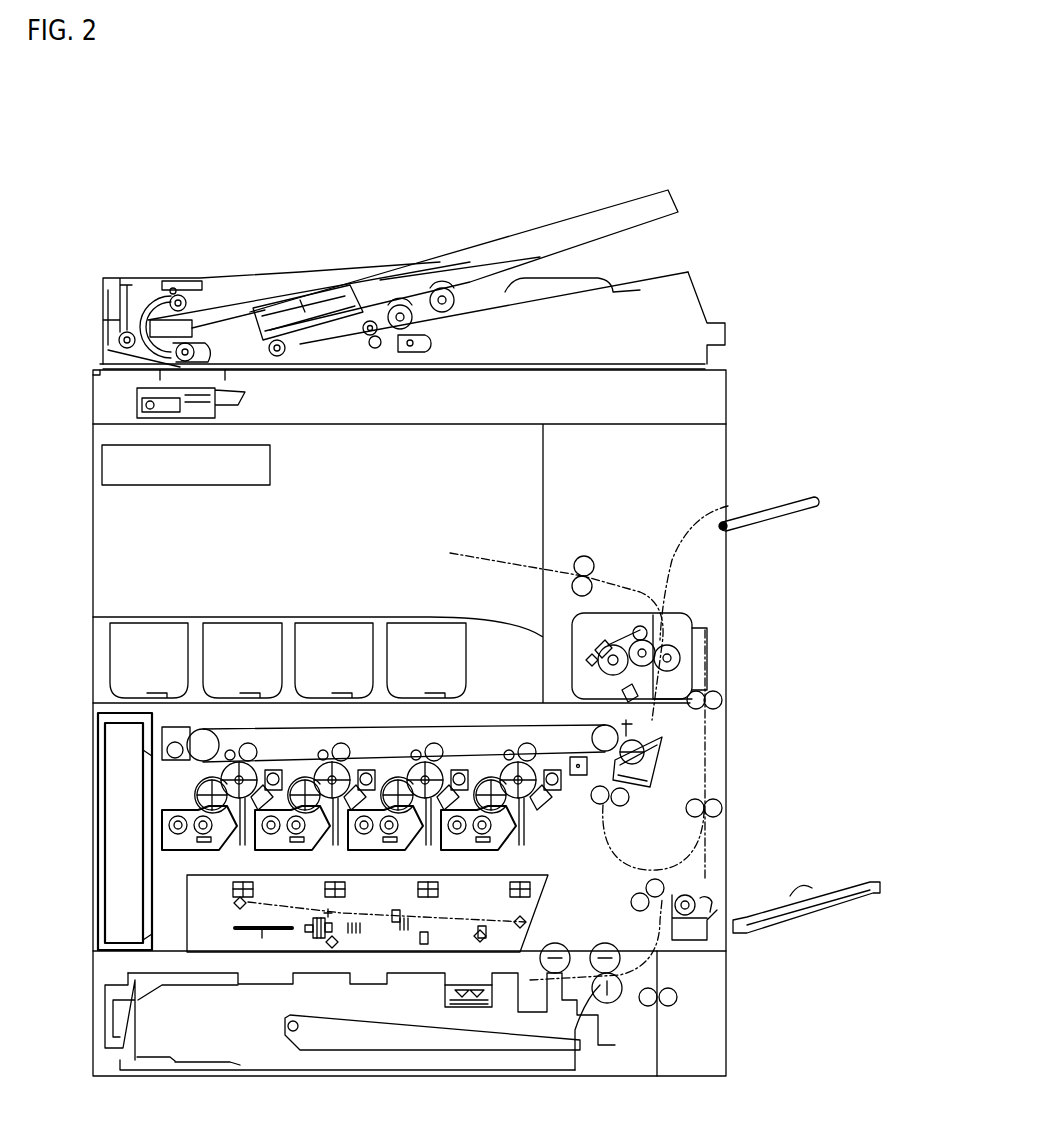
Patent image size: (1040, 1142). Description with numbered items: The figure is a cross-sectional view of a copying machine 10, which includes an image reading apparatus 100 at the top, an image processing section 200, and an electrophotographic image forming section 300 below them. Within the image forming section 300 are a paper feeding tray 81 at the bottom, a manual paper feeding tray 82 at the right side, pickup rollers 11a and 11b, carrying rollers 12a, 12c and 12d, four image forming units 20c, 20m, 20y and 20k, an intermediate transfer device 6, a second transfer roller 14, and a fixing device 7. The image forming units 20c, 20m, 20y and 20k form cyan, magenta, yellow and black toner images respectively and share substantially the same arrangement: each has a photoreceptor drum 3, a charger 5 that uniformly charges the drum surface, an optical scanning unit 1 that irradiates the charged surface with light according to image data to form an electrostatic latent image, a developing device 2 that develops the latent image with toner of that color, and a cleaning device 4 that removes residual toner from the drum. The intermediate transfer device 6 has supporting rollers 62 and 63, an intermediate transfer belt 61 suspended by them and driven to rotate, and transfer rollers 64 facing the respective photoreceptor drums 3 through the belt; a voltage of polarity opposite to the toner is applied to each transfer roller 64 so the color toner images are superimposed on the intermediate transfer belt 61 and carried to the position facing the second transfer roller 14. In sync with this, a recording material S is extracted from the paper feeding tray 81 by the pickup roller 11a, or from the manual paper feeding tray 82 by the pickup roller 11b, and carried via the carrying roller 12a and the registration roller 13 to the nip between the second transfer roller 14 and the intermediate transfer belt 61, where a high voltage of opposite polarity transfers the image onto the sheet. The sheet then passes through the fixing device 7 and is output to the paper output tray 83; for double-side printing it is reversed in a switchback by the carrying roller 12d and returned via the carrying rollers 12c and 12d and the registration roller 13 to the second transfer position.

The copying machine 10 is at (715, 98).
The image reading apparatus 100 is at (76, 339).
The image processing section 200 is at (101, 470).
The image forming section 300 is at (76, 736).
The optical scanning unit 1 is at (550, 881).
The developing device 2 is at (198, 792).
The photoreceptor drum 3 is at (237, 762).
The charging device 4 is at (283, 770).
The charger 5 is at (242, 842).
The intermediate transfer device 6 is at (413, 706).
The intermediate transfer belt 61 is at (516, 718).
The supporting roller 62 is at (618, 733).
The supporting roller 63 is at (205, 728).
The transfer roller 64 is at (257, 748).
The fixing device 7 is at (700, 630).
The paper feeding tray 81 is at (353, 1030).
The manual paper feeding tray 82 is at (827, 878).
The paper output tray 83 is at (797, 500).
The pickup roller 11a is at (558, 946).
The pickup roller 11b is at (718, 893).
The carrying roller 12a is at (666, 882).
The carrying roller 12c is at (723, 700).
The carrying roller 12d is at (585, 556).
The registration roller 13 is at (630, 797).
The second transfer roller 14 is at (644, 752).
The image forming unit 20c is at (174, 870).
The image forming unit 20m is at (295, 870).
The image forming unit 20y is at (386, 870).
The image forming unit 20k is at (479, 870).
The recording sheet path S is at (600, 855).